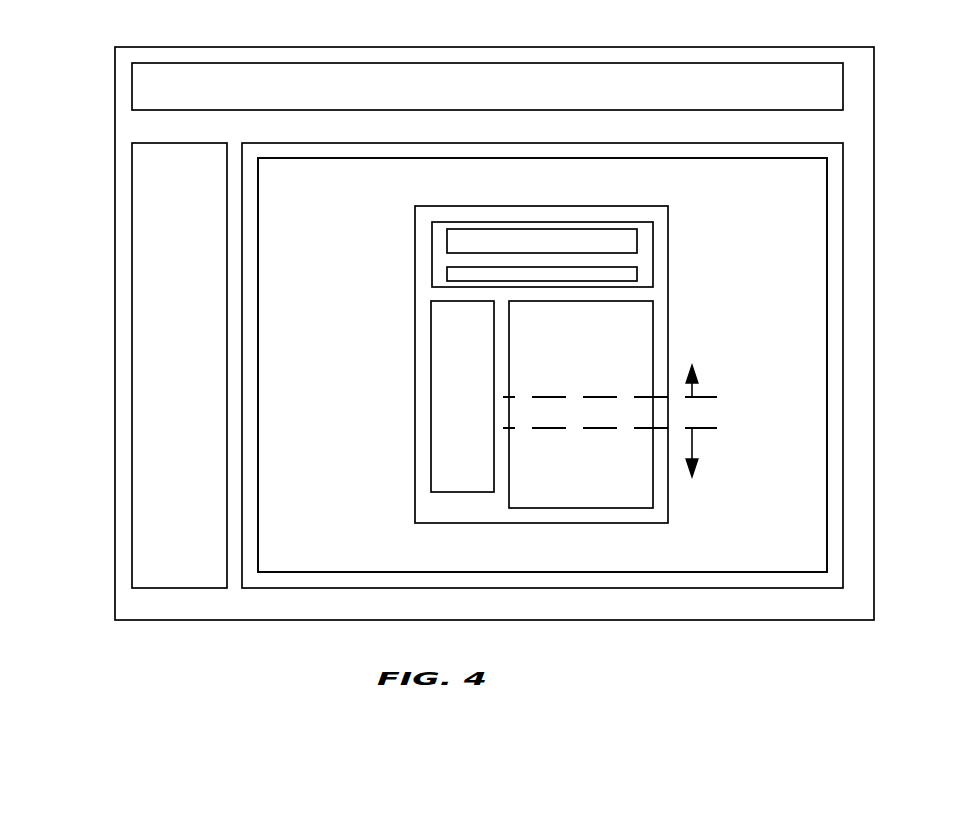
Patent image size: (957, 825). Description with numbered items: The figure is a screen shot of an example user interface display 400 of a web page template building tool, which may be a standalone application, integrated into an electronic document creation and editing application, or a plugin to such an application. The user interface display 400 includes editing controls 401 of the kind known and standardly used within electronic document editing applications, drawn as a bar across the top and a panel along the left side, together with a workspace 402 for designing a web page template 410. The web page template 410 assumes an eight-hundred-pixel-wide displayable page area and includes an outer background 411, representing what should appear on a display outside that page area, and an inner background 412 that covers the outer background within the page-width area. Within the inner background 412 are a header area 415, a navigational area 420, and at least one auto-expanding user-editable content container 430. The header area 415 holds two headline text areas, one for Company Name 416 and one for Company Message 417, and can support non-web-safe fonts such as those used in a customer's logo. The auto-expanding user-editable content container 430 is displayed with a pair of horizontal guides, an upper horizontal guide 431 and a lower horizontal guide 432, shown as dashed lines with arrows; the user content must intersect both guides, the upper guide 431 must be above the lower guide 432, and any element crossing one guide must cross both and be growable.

The user interface display 400 is at (115, 77).
The editing controls 401 is at (132, 97).
The workspace 402 is at (606, 143).
The web page template 410 is at (348, 162).
The outer background 411 is at (763, 190).
The inner background 412 is at (511, 203).
The header area 415 is at (653, 231).
The Company Name headline area 416 is at (447, 238).
The Company Message headline area 417 is at (447, 273).
The navigational area 420 is at (431, 345).
The auto-expanding user-editable content container 430 is at (653, 320).
The upper horizontal guide 431 is at (700, 395).
The lower horizontal guide 432 is at (702, 432).